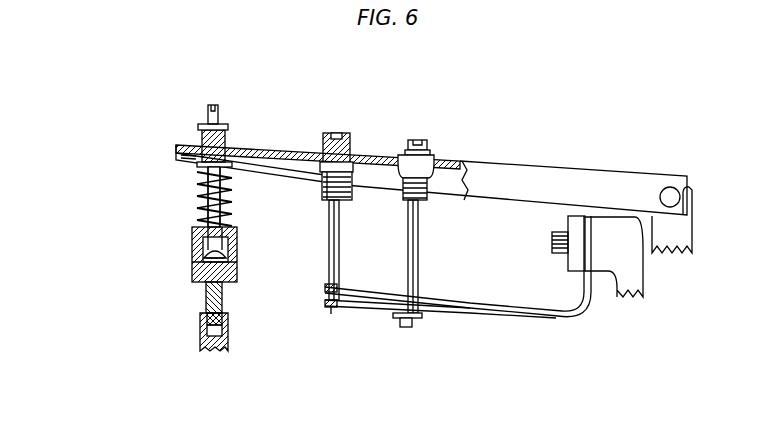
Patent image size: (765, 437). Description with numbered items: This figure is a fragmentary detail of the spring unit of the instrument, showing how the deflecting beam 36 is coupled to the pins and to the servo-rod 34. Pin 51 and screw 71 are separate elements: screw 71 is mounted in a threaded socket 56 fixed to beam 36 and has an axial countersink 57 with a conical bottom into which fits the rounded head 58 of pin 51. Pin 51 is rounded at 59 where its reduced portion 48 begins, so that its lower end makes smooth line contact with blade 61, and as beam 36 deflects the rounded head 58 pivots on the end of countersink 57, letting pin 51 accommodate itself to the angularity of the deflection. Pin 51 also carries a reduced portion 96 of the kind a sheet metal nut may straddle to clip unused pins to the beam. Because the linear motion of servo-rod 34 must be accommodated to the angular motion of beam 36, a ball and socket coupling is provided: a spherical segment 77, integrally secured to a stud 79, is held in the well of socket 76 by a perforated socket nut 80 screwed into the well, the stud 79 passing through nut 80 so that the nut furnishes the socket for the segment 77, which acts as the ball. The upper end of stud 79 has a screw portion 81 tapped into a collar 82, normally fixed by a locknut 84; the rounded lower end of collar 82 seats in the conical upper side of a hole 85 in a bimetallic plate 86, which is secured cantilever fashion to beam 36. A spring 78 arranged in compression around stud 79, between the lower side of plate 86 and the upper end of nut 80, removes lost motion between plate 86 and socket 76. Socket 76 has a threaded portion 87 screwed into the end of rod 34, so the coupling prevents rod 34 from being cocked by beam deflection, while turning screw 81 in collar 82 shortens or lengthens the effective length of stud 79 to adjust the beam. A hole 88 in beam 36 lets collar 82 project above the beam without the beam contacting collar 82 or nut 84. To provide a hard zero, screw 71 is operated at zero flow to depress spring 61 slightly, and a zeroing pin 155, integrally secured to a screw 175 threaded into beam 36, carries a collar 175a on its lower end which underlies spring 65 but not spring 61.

The servo-rod 34 is at (200, 347).
The beam 36 is at (655, 173).
The reduced portion 48 is at (328, 309).
The pin 51 is at (340, 241).
The threaded socket 56 is at (353, 166).
The axial countersink 57 is at (328, 196).
The rounded head 58 is at (322, 179).
The rounded portion of pin 59 is at (338, 288).
The blade (spring) 61 is at (425, 297).
The spring 65 is at (376, 306).
The screw 71 is at (331, 140).
The socket (well) 76 is at (228, 274).
The spherical segment 77 is at (196, 281).
The spring 78 is at (206, 218).
The stud 79 is at (198, 202).
The perforated socket nut 80 is at (194, 238).
The screw portion 81 is at (210, 120).
The collar 82 is at (204, 138).
The locknut 84 is at (206, 127).
The hole 85 is at (178, 151).
The bimetallic plate 86 is at (178, 160).
The threaded portion 87 is at (224, 297).
The hole 88 is at (240, 147).
The reduced portion 96 is at (343, 192).
The zeroing pin 155 is at (419, 238).
The screw 175 is at (421, 141).
The collar 175a is at (421, 316).